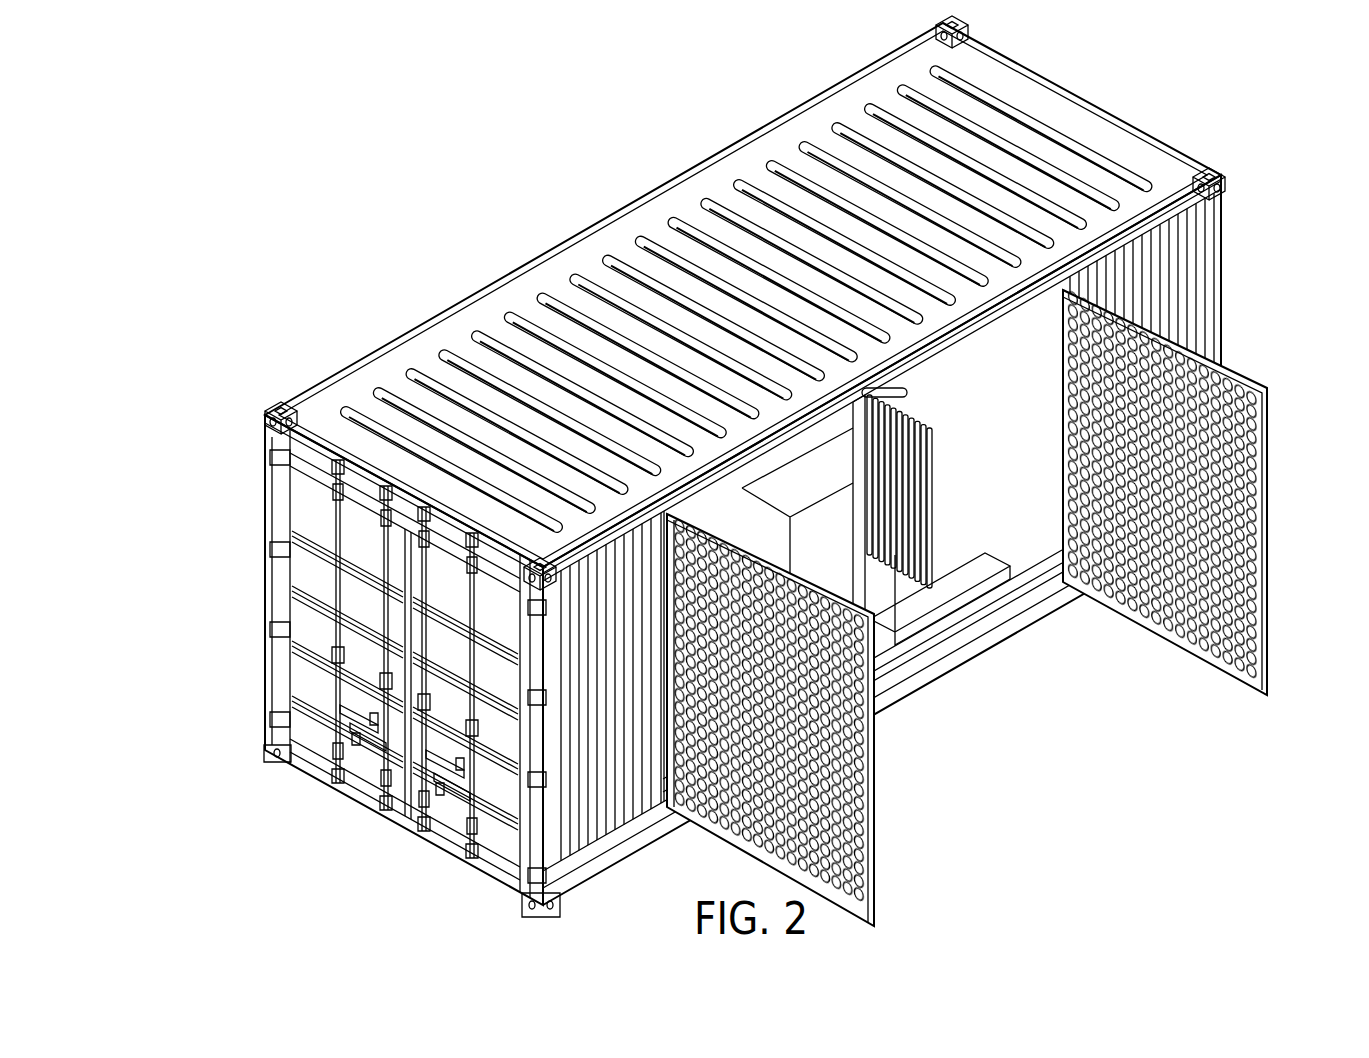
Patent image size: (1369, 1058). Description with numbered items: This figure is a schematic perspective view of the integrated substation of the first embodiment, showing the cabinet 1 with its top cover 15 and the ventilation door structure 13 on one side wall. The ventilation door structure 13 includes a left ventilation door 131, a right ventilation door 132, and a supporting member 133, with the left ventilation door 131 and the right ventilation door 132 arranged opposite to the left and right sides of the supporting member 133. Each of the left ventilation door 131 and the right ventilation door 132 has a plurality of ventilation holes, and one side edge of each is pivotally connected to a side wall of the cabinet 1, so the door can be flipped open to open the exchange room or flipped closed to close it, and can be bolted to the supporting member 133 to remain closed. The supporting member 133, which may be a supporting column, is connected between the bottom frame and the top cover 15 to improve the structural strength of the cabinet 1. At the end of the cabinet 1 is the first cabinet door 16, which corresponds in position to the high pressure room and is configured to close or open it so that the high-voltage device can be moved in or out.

The cabinet 1 is at (254, 490).
The ventilation door structure 13 is at (700, 523).
The top cover 15 is at (623, 238).
The first cabinet door 16 is at (310, 690).
The left ventilation door 131 is at (867, 798).
The right ventilation door 132 is at (1264, 540).
The supporting member 133 is at (863, 573).